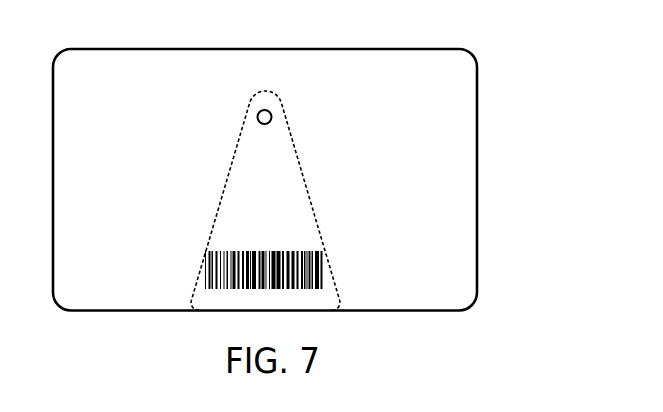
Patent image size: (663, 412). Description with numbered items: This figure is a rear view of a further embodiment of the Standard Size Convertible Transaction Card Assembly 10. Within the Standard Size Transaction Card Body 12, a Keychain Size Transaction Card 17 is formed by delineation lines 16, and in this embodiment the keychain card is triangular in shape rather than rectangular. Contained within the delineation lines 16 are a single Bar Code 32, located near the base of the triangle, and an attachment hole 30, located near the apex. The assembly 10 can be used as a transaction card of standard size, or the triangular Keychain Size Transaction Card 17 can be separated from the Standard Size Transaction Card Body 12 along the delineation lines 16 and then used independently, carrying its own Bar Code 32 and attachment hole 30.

The Standard Size Convertible Transaction Card Assembly 10 is at (299, 162).
The Standard Size Transaction Card Body 12 is at (468, 125).
The delineation lines 16 is at (221, 196).
The Keychain Size Transaction Card 17 is at (352, 201).
The attachment hole 30 is at (268, 110).
The Bar Code 32 is at (315, 273).